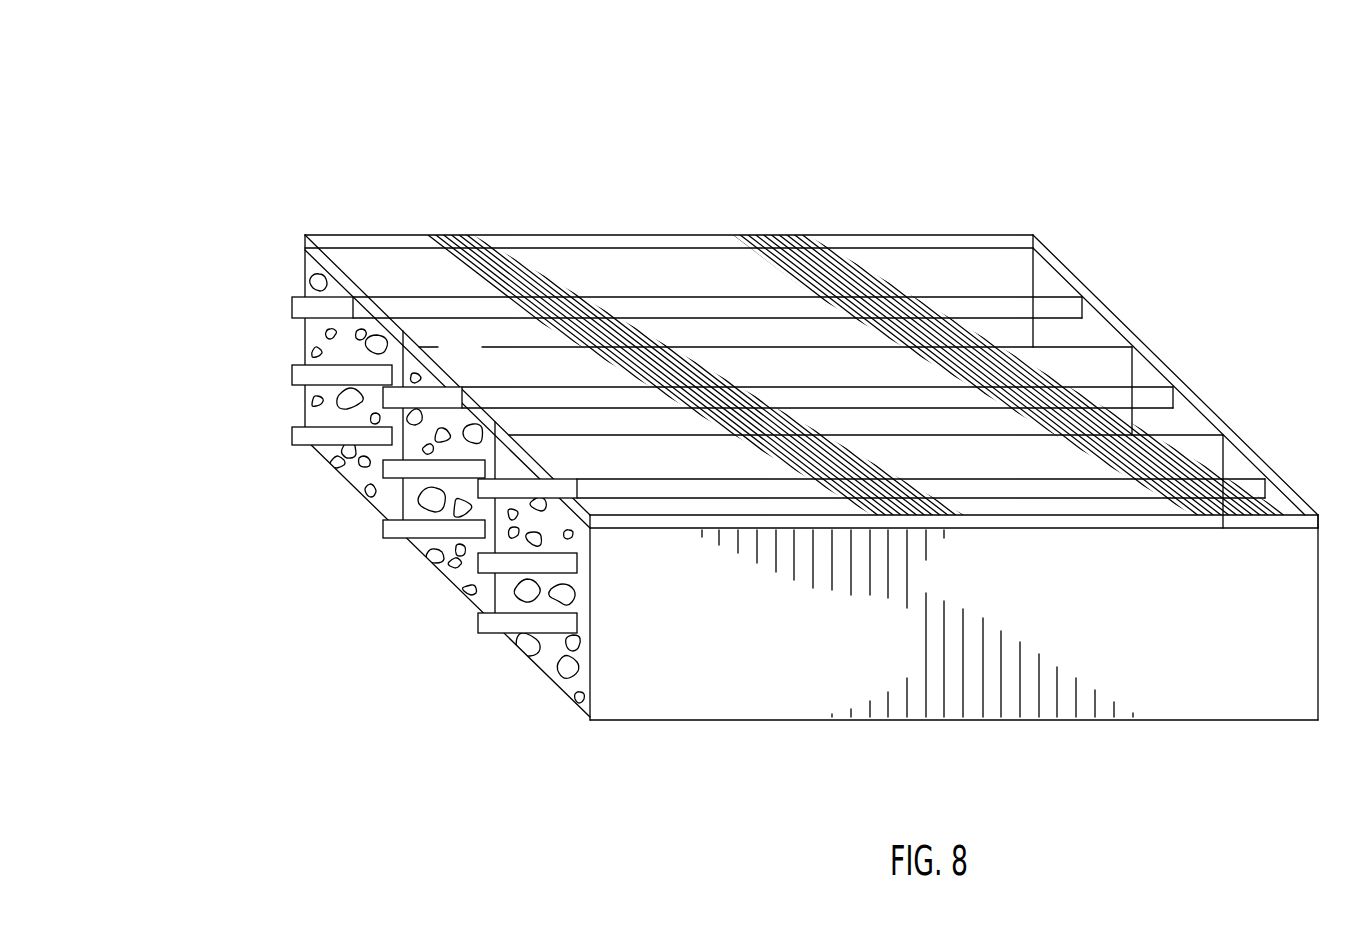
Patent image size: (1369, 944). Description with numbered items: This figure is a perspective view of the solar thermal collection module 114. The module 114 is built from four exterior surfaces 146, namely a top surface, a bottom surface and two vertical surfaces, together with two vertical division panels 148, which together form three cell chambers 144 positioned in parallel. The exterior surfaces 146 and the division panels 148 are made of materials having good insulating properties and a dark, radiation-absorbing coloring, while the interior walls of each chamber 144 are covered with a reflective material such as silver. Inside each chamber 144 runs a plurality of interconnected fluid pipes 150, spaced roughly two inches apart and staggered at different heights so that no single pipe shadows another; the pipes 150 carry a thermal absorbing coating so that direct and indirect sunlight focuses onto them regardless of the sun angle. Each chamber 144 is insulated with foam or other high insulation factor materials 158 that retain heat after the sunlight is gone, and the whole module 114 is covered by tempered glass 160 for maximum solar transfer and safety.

The solar thermal collection module 114 is at (574, 98).
The cell chamber 144 is at (405, 542).
The exterior surface 146 is at (1067, 347).
The vertical division panel 148 is at (500, 453).
The fluid pipe 150 is at (322, 307).
The high insulation factor material 158 is at (322, 280).
The tempered glass 160 is at (758, 236).